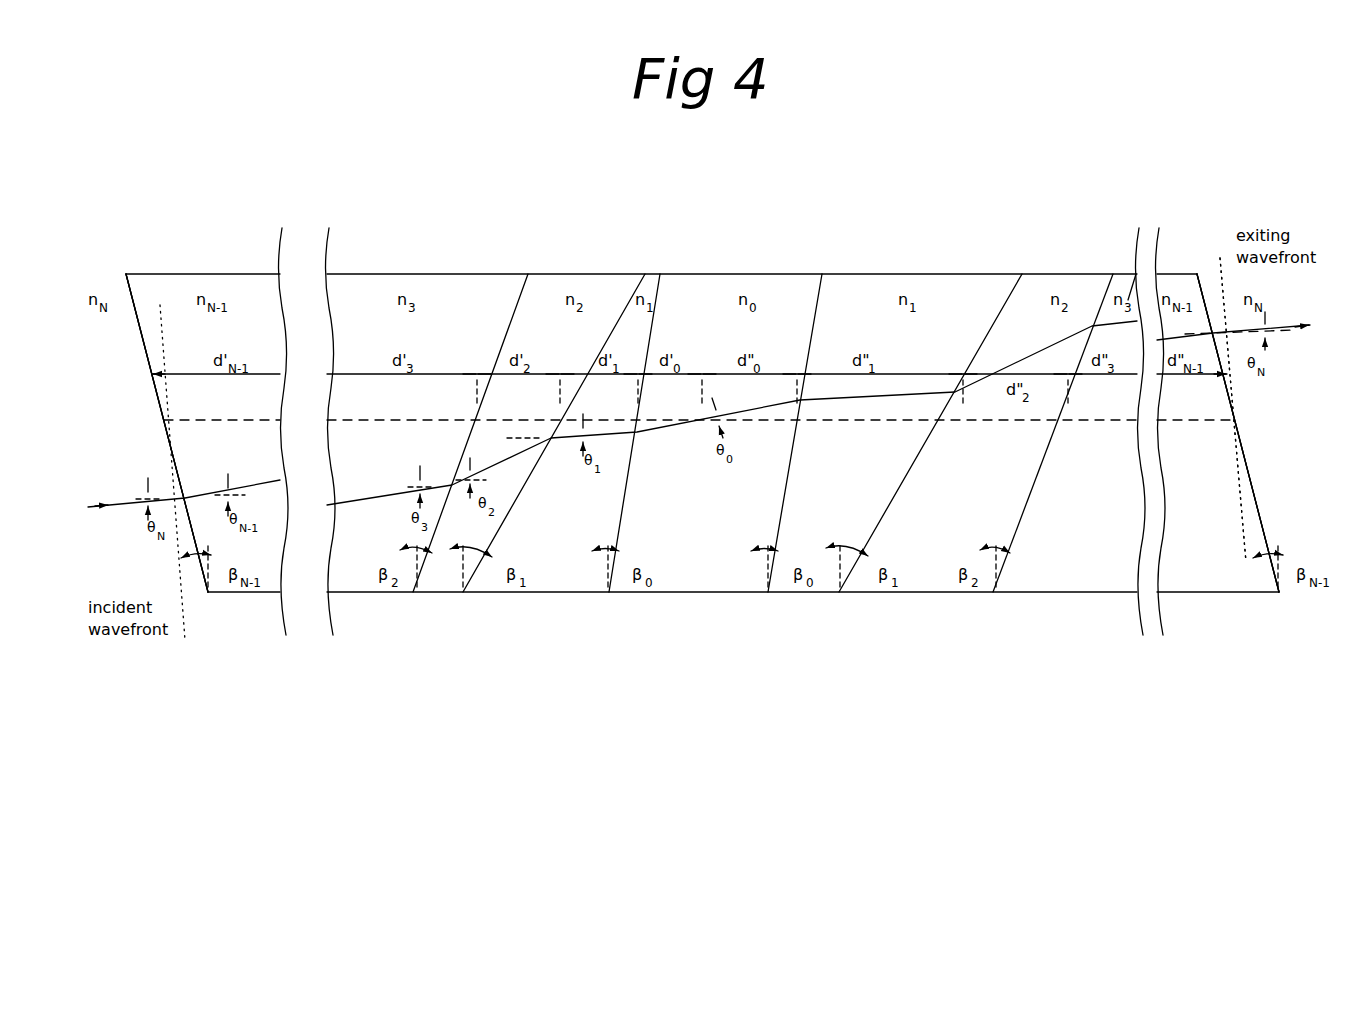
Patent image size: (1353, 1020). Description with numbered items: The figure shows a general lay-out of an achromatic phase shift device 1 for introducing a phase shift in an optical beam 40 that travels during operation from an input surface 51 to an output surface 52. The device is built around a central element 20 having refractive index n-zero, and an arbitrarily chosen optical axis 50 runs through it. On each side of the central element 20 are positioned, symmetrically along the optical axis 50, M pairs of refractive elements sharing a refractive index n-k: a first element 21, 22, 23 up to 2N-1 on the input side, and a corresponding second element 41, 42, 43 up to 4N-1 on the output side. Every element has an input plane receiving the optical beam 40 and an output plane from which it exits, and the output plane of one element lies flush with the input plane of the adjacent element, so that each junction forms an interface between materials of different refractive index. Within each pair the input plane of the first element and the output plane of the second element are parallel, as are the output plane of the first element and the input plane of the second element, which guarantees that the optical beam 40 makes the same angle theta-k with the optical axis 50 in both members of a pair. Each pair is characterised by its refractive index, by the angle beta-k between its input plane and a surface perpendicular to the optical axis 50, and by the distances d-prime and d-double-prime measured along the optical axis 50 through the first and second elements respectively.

The phase shift device 1 is at (752, 617).
The optical beam 40 is at (140, 512).
The optical axis 50 is at (1190, 422).
The input surface 51 is at (150, 378).
The output surface 52 is at (1195, 293).
The first element of the (N-1)th pair 2N-1 is at (182, 288).
The first element of the third pair 23 is at (446, 292).
The first element of the second pair 22 is at (604, 292).
The first element of the first pair 21 is at (644, 281).
The central element 20 is at (760, 292).
The second element of the first pair 41 is at (914, 292).
The second element of the second pair 42 is at (1074, 292).
The second element of the third pair 43 is at (1122, 292).
The second element of the (N-1)th pair 4N-1 is at (1170, 293).